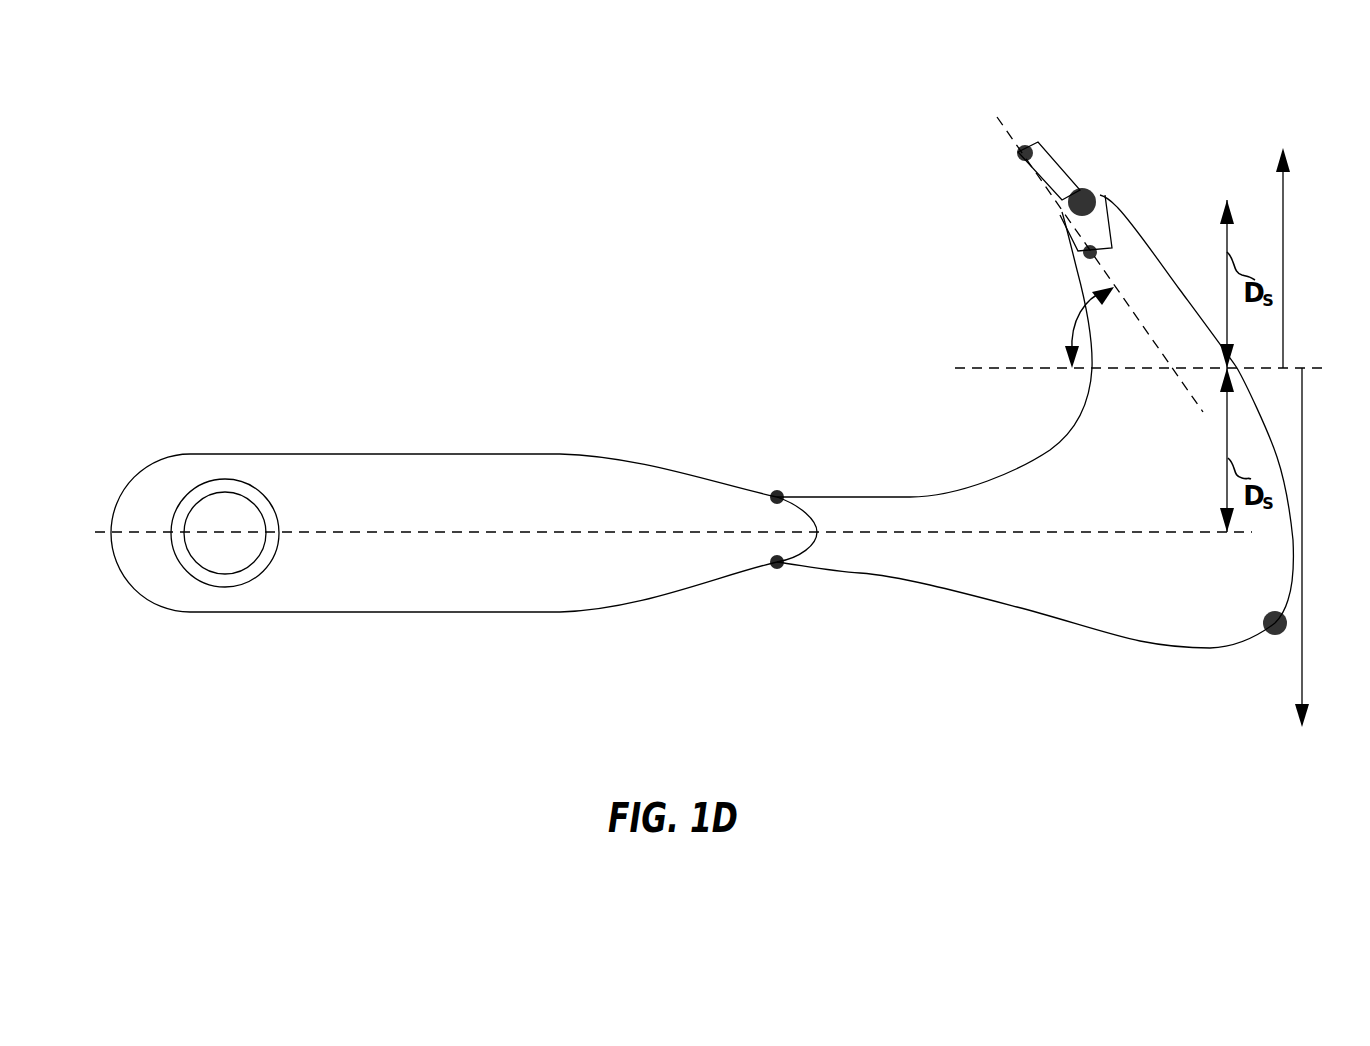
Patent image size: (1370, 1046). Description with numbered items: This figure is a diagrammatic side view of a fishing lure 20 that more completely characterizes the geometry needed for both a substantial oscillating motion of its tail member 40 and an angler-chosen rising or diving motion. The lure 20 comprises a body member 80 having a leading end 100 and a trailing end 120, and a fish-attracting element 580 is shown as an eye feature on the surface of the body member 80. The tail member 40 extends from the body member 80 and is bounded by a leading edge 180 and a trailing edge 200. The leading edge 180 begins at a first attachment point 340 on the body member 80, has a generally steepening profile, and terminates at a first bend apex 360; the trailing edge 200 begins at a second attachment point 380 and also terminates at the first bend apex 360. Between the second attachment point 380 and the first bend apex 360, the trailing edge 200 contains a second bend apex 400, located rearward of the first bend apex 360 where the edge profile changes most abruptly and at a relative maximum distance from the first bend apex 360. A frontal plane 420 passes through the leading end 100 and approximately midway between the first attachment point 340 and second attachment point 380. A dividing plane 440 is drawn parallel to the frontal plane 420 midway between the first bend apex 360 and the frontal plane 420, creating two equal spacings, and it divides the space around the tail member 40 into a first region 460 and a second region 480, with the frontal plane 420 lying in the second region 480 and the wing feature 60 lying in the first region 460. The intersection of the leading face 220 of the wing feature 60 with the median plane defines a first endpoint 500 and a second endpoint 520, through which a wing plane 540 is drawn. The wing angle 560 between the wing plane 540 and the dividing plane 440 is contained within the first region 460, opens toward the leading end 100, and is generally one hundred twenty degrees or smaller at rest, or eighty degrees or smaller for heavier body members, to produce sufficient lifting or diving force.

The fishing lure 20 is at (376, 208).
The tail member 40 is at (1157, 623).
The wing feature 60 is at (1053, 167).
The body member 80 is at (507, 590).
The leading end 100 is at (125, 540).
The trailing end 120 is at (807, 522).
The leading edge 180 is at (922, 493).
The trailing edge 200 is at (1188, 288).
The leading face 220 is at (1060, 193).
The first attachment point 340 is at (779, 492).
The first bend apex 360 is at (1082, 195).
The second attachment point 380 is at (777, 568).
The second bend apex 400 is at (1277, 633).
The frontal plane 420 is at (878, 532).
The dividing plane 440 is at (1013, 370).
The first region 460 is at (1283, 252).
The second region 480 is at (1302, 453).
The first endpoint 500 is at (1083, 251).
The second endpoint 520 is at (1018, 154).
The wing plane 540 is at (1012, 136).
The wing angle 560 is at (1077, 316).
The fish-attracting element 580 is at (228, 583).